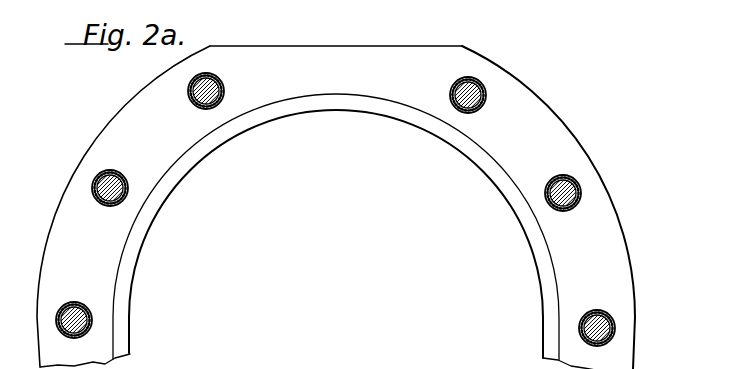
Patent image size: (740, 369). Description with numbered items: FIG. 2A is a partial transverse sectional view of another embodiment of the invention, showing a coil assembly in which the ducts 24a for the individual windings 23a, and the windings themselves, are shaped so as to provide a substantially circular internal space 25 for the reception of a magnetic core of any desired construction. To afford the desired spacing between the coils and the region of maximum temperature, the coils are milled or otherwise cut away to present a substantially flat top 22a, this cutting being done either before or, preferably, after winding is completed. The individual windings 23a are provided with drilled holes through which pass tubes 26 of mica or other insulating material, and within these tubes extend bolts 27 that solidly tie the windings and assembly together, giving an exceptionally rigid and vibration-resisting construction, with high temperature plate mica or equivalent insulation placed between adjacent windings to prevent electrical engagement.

The flat top 22a is at (331, 46).
The individual windings 23a is at (615, 278).
The ducts 24a is at (532, 233).
The internal space 25 is at (336, 234).
The tubes 26 is at (479, 83).
The bolts 27 is at (486, 92).